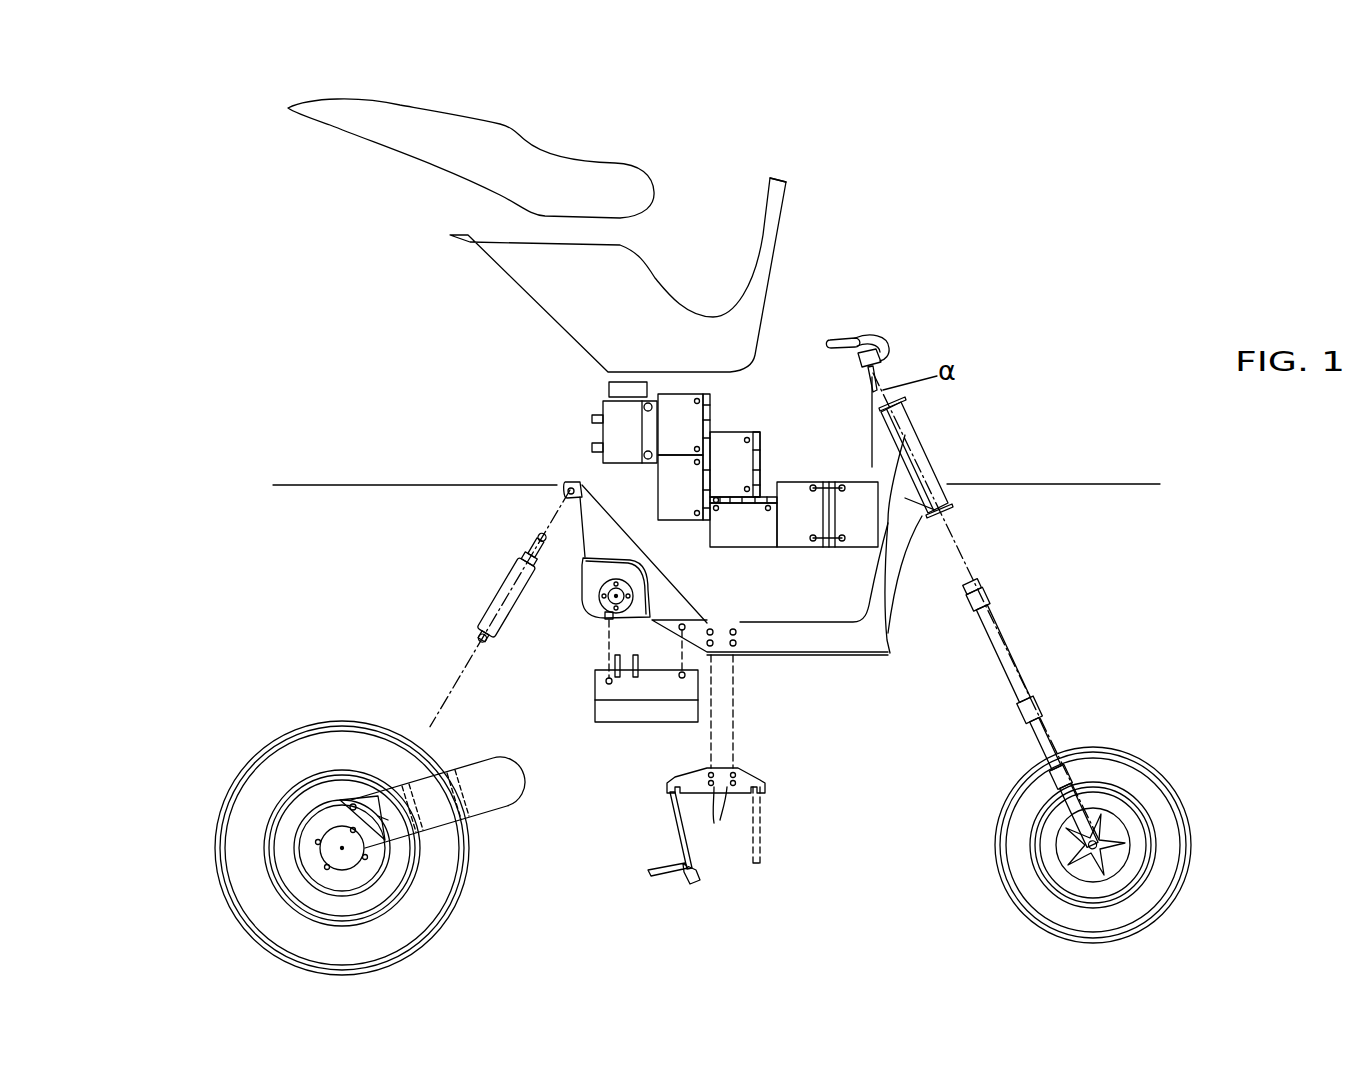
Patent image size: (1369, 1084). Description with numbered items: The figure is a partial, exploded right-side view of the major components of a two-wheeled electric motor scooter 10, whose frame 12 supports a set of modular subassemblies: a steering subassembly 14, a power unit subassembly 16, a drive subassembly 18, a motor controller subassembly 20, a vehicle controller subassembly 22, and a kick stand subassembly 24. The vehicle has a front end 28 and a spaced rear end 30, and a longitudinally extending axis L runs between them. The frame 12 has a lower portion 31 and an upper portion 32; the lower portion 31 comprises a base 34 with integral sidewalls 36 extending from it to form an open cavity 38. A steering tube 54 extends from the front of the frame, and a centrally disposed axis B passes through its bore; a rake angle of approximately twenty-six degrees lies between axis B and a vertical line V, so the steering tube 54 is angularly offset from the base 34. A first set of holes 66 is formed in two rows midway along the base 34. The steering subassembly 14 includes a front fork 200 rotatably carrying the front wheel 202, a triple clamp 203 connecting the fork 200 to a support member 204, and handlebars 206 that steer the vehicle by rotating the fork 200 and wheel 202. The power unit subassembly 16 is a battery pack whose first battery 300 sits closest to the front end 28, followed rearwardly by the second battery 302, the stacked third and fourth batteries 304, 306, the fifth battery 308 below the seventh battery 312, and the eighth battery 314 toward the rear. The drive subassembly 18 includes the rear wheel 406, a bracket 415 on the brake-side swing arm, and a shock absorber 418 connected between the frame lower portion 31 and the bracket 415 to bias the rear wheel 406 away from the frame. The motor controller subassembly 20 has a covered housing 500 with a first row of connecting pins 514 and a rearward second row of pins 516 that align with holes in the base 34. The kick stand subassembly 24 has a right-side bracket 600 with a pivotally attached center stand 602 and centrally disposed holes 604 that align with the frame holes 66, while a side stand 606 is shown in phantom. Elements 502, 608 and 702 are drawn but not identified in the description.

The two-wheeled electric motor scooter 10 is at (1011, 237).
The frame 12 is at (542, 465).
The steering subassembly 14 is at (1002, 575).
The power unit subassembly 16 is at (768, 443).
The drive subassembly 18 is at (367, 647).
The motor controller subassembly 20 is at (630, 723).
The vehicle controller subassembly 22 is at (609, 388).
The kick stand subassembly 24 is at (782, 777).
The front end 28 is at (1046, 564).
The rear end 30 is at (322, 475).
The frame lower portion 31 is at (888, 647).
The frame upper portion 32 is at (787, 240).
The base 34 is at (808, 653).
The integral sidewalls 36 is at (622, 557).
The open cavity 38 is at (653, 548).
The steering tube 54 is at (925, 460).
The first set of holes 66 is at (735, 631).
The front fork 200 is at (1040, 815).
The front wheel 202 is at (1018, 908).
The triple clamp 203 is at (1040, 707).
The support member 204 is at (1012, 673).
The handlebars 206 is at (862, 333).
The first battery 300 is at (860, 527).
The second battery 302 is at (792, 520).
The third battery 304 is at (762, 542).
The fourth battery 306 is at (780, 405).
The fifth battery 308 is at (680, 484).
The seventh battery 312 is at (685, 417).
The eighth battery 314 is at (603, 432).
The rear wheel 406 is at (226, 796).
The bracket 415 is at (363, 797).
The shock absorber 418 is at (545, 574).
The covered housing 500 is at (595, 690).
The battery base 502 is at (595, 713).
The first row of connecting pins 514 is at (636, 658).
The second row of connecting pins 516 is at (612, 664).
The right-side bracket 600 is at (740, 767).
The center stand 602 is at (670, 827).
The centrally disposed holes 604 is at (714, 822).
The side stand 606 is at (758, 823).
The kickstand foot 608 is at (665, 873).
The seat 702 is at (633, 167).
The longitudinally extending axis L is at (418, 487).
The vertical line V is at (872, 402).
The centrally disposed axis B is at (880, 367).